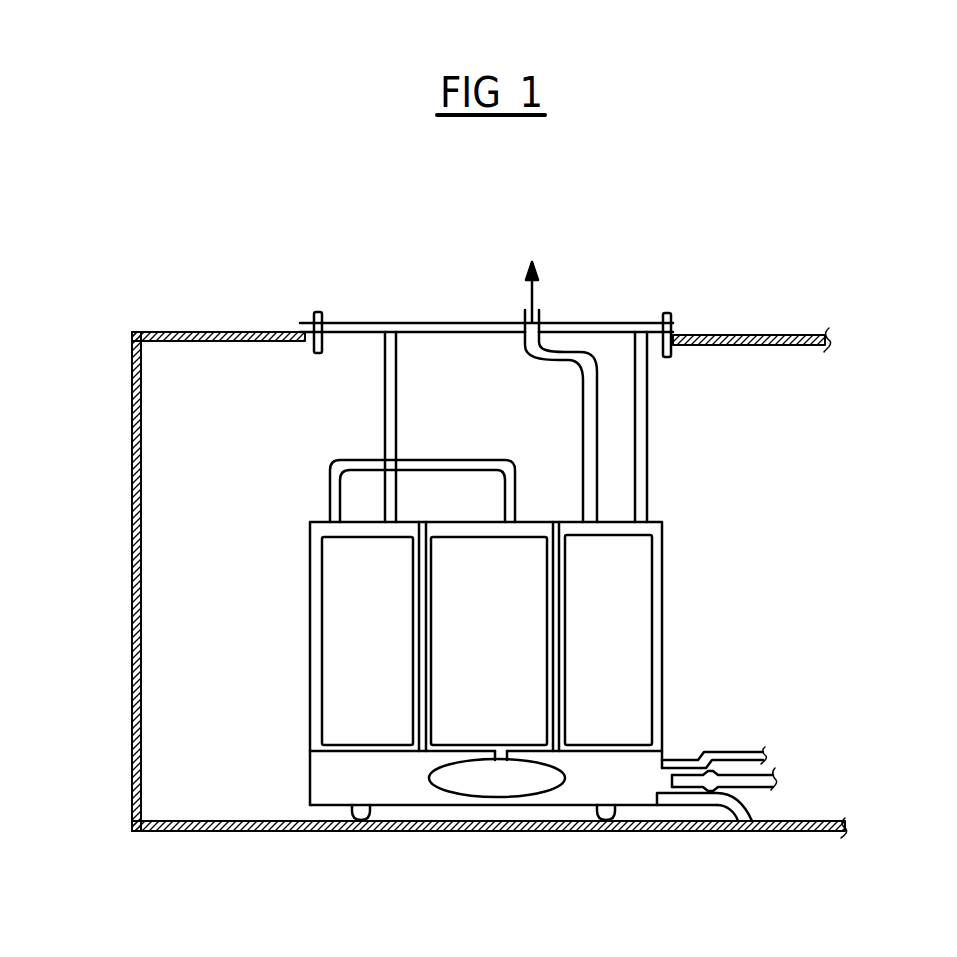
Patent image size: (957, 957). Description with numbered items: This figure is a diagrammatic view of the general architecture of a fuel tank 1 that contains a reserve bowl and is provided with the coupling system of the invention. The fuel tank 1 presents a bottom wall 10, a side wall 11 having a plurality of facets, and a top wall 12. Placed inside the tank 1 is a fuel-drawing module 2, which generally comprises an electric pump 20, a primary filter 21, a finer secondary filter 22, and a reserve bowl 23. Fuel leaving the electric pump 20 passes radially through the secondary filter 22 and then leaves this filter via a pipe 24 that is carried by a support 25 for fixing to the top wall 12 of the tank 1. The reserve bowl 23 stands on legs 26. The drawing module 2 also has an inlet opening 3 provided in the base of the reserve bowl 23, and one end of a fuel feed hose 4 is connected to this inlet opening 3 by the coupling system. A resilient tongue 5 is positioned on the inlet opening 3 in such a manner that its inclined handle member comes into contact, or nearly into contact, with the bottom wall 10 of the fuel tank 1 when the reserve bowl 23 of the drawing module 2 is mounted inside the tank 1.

The fuel tank 1 is at (230, 378).
The fuel-drawing module 2 is at (677, 610).
The inlet opening 3 is at (680, 767).
The fuel feed hose 4 is at (773, 780).
The resilient tongue 5 is at (723, 813).
The bottom wall 10 is at (217, 833).
The side wall 11 is at (130, 593).
The top wall 12 is at (762, 335).
The electric pump 20 is at (467, 707).
The primary filter 21 is at (517, 780).
The secondary filter 22 is at (343, 673).
The reserve bowl 23 is at (627, 790).
The pipe 24 is at (583, 357).
The support 25 is at (437, 323).
The legs 26 is at (360, 829).